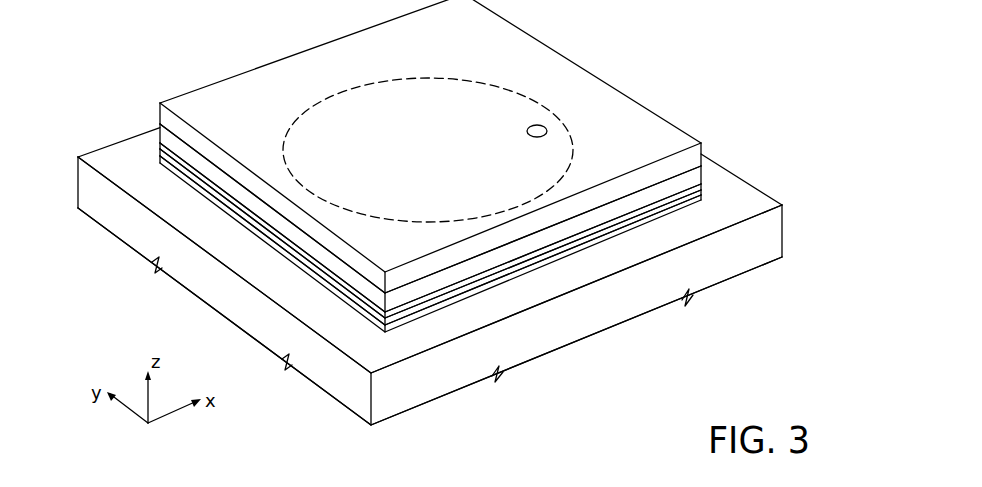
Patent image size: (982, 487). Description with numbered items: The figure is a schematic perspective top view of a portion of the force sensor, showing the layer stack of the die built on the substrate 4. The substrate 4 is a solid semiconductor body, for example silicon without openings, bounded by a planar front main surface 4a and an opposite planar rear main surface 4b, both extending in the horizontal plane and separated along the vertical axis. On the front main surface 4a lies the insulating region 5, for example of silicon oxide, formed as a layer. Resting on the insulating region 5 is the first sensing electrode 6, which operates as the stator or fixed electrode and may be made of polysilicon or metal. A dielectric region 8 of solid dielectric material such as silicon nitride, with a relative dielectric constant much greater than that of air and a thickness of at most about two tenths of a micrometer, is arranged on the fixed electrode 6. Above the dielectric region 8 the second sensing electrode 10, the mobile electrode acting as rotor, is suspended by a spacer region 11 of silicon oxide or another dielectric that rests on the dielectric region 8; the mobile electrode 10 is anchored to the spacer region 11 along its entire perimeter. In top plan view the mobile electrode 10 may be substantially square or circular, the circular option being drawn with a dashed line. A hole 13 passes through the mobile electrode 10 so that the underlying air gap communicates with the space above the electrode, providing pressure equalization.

The substrate 4 is at (777, 231).
The front main surface 4a is at (757, 199).
The rear main surface 4b is at (759, 282).
The insulating region 5 is at (565, 257).
The first sensing electrode 6 is at (620, 232).
The dielectric region 8 is at (702, 192).
The second sensing electrode 10 is at (643, 116).
The spacer region 11 is at (701, 167).
The hole 13 is at (540, 121).